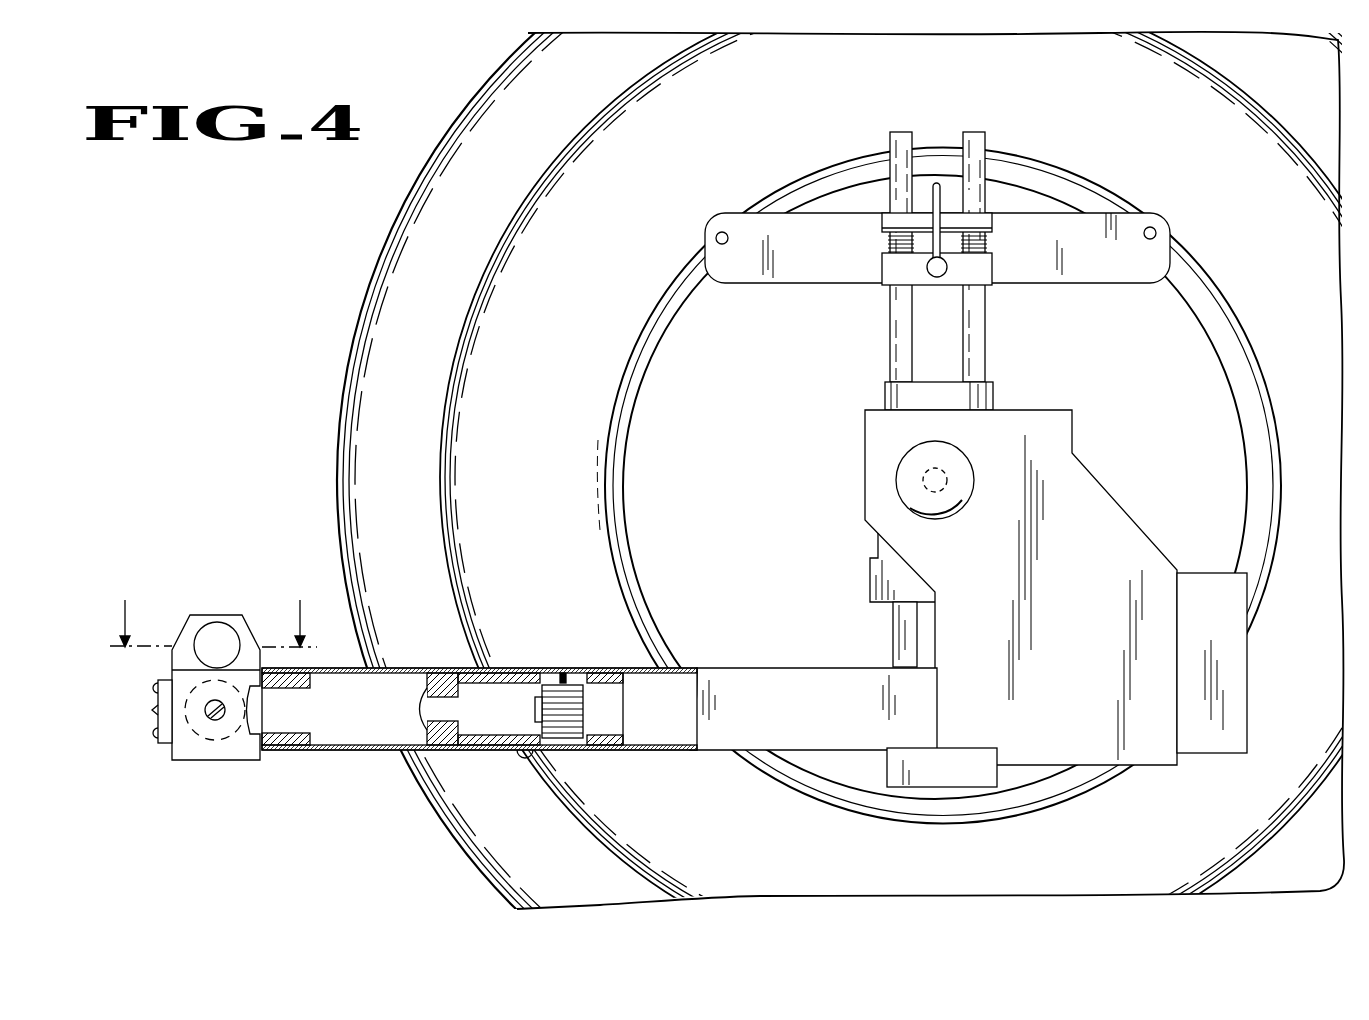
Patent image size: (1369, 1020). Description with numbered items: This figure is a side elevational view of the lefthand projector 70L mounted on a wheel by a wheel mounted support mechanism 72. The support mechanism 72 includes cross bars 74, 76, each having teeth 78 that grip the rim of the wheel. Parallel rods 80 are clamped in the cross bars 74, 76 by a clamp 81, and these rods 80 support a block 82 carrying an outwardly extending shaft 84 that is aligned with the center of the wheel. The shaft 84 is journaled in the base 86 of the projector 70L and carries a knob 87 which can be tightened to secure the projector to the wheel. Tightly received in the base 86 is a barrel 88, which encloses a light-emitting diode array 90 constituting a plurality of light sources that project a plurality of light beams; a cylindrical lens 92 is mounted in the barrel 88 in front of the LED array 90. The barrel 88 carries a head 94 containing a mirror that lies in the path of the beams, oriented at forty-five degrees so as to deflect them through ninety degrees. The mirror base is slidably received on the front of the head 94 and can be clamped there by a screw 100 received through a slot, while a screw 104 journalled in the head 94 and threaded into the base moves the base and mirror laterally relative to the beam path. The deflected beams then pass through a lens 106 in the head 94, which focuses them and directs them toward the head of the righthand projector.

The projector 70L is at (665, 437).
The wheel mounted support mechanism 72 is at (932, 246).
The cross bar 74 is at (781, 259).
The cross bar 76 is at (813, 757).
The teeth 78 is at (707, 222).
The parallel rods 80 is at (970, 132).
The clamp 81 is at (992, 285).
The block 82 is at (993, 388).
The shaft 84 is at (947, 471).
The base 86 is at (1056, 587).
The knob 87 is at (955, 510).
The barrel 88 is at (599, 694).
The light-emitting diode array 90 is at (546, 668).
The cylindrical lens 92 is at (420, 700).
The head 94 is at (190, 703).
The screw 100 is at (152, 710).
The screw 104 is at (226, 711).
The lens 106 is at (190, 686).